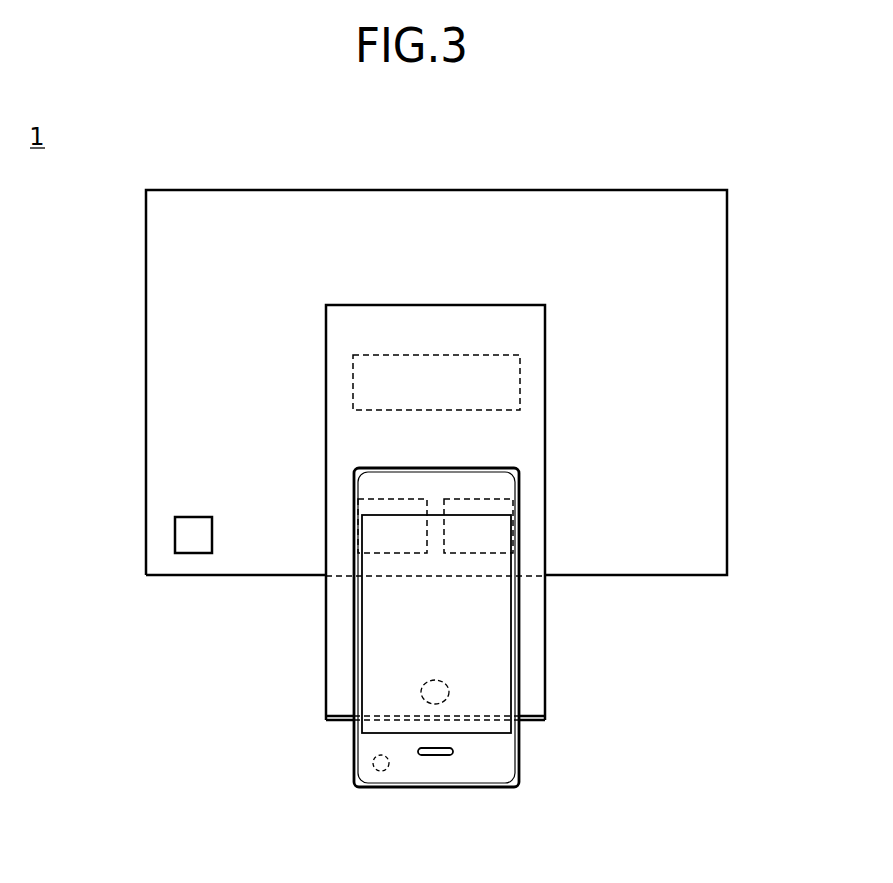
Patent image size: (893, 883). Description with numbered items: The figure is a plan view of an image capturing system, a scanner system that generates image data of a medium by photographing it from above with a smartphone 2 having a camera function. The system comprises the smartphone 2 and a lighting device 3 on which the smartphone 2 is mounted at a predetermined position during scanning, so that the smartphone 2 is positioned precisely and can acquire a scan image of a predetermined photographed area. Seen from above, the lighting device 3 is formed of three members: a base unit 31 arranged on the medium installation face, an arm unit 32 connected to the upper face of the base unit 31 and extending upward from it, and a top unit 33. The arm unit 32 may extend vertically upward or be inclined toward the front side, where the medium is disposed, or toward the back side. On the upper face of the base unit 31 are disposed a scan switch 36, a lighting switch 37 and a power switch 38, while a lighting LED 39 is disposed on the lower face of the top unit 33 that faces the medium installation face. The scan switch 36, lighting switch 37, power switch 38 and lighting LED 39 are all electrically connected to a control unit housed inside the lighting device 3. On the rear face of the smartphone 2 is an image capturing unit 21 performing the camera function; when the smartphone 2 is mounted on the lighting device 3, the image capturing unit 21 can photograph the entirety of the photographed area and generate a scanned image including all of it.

The smartphone 2 is at (465, 768).
The lighting device 3 is at (727, 312).
The image capturing unit 21 is at (378, 773).
The base unit 31 is at (247, 212).
The arm unit 32 is at (434, 355).
The top unit 33 is at (546, 428).
The scan switch 36 is at (383, 498).
The lighting switch 37 is at (471, 498).
The power switch 38 is at (193, 523).
The lighting LED 39 is at (432, 680).